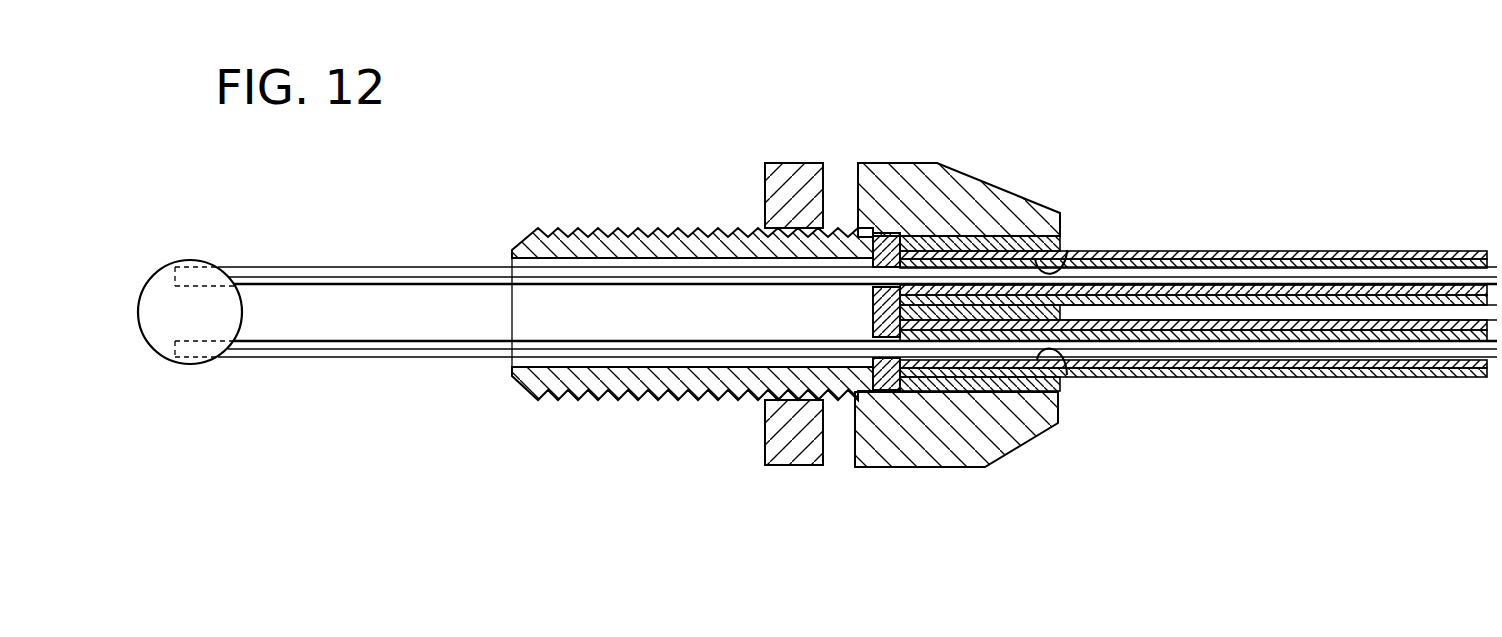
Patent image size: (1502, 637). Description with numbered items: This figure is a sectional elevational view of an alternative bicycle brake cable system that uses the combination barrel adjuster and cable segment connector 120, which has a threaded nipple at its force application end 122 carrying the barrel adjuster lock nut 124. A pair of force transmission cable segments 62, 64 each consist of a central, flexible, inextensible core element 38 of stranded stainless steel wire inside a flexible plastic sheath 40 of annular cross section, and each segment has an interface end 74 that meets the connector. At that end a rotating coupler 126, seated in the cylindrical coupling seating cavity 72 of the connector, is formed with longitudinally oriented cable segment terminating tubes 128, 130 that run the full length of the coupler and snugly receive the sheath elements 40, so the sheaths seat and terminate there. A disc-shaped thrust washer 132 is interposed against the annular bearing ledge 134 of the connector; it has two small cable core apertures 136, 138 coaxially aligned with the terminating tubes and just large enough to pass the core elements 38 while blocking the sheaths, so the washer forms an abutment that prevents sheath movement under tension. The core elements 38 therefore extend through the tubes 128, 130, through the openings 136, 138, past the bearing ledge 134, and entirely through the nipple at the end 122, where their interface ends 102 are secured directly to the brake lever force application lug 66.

The brake lever force application lug 66 is at (163, 290).
The interface ends of the core elements 102 is at (336, 275).
The force application end 122 is at (600, 232).
The barrel adjuster lock nut 124 is at (787, 172).
The rotating coupler 126 is at (938, 230).
The cylindrical coupling seating cavity 72 is at (981, 383).
The thrust washer 132 is at (883, 230).
The bearing ledge 134 is at (880, 376).
The cable core aperture 136 is at (880, 273).
The cable core aperture 138 is at (895, 352).
The interface end 74 is at (1082, 248).
The force transmission cable segment 62 is at (1390, 250).
The force transmission cable segment 64 is at (1410, 383).
The core element 38 is at (1207, 273).
The sheath 40 is at (1278, 250).
The barrel adjuster and cable segment connector 120 is at (986, 173).
The cable segment terminating tube 130 is at (1067, 250).
The cable segment terminating tube 128 is at (1067, 375).